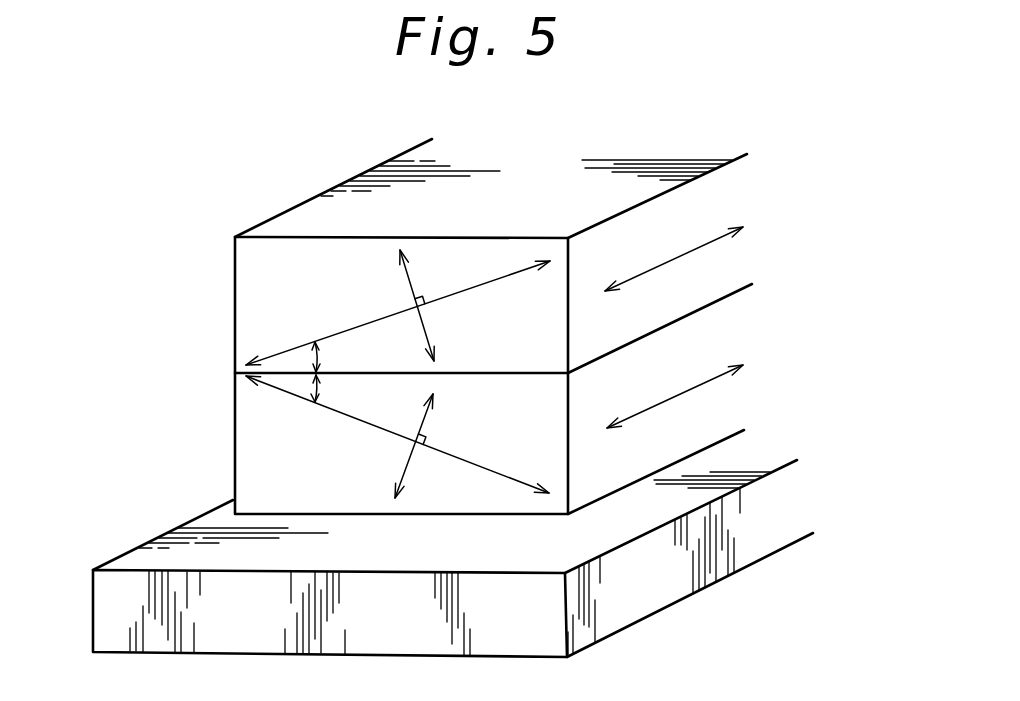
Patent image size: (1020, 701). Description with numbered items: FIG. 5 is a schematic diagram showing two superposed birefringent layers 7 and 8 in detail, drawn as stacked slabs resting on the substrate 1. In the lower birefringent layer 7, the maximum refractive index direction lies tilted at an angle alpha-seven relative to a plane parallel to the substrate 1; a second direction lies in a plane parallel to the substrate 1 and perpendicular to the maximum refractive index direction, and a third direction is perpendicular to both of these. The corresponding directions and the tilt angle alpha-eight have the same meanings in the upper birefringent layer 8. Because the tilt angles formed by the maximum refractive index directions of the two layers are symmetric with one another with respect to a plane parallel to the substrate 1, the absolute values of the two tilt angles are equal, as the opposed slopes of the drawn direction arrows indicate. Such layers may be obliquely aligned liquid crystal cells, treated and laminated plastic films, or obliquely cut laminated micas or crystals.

The substrate 1 is at (198, 533).
The birefringent layer 7 is at (247, 418).
The birefringent layer 8 is at (252, 302).